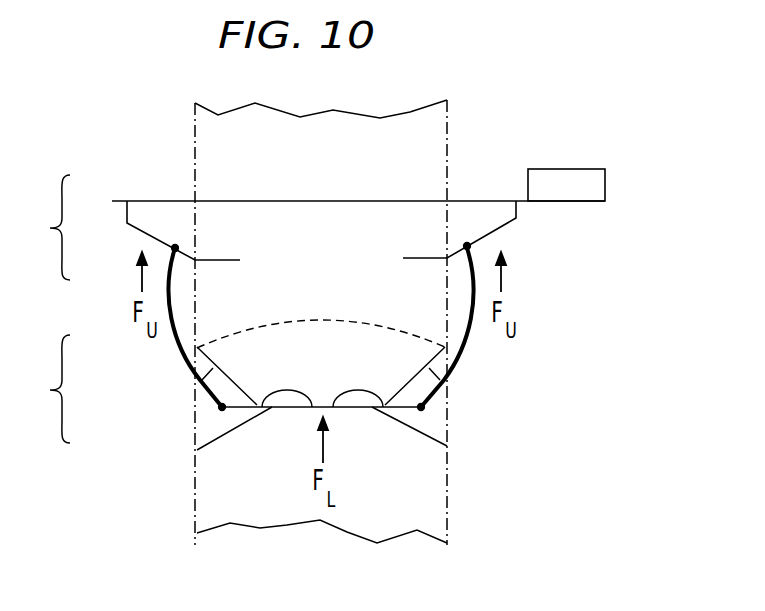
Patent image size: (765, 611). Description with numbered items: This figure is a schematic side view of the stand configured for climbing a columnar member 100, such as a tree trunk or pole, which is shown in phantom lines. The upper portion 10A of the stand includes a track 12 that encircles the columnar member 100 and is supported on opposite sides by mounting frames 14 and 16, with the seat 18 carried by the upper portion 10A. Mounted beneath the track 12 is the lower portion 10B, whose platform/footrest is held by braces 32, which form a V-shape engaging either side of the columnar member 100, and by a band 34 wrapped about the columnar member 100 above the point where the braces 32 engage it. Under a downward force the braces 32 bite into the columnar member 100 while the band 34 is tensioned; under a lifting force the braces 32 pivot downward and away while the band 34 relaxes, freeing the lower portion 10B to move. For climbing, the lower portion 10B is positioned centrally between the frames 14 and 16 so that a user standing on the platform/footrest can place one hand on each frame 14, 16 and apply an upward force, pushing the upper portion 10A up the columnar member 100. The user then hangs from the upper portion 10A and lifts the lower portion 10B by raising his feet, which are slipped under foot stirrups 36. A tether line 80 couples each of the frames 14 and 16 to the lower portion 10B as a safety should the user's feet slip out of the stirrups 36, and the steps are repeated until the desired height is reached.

The columnar member 100 is at (195, 165).
The upper portion 10A is at (38, 227).
The lower portion 10B is at (38, 389).
The track 12 is at (476, 200).
The frame 14 is at (507, 223).
The frame 16 is at (130, 232).
The seat 18 is at (606, 183).
The braces 32 is at (222, 435).
The band 34 is at (198, 396).
The foot stirrups 36 is at (290, 390).
The tether line 80 is at (173, 307).